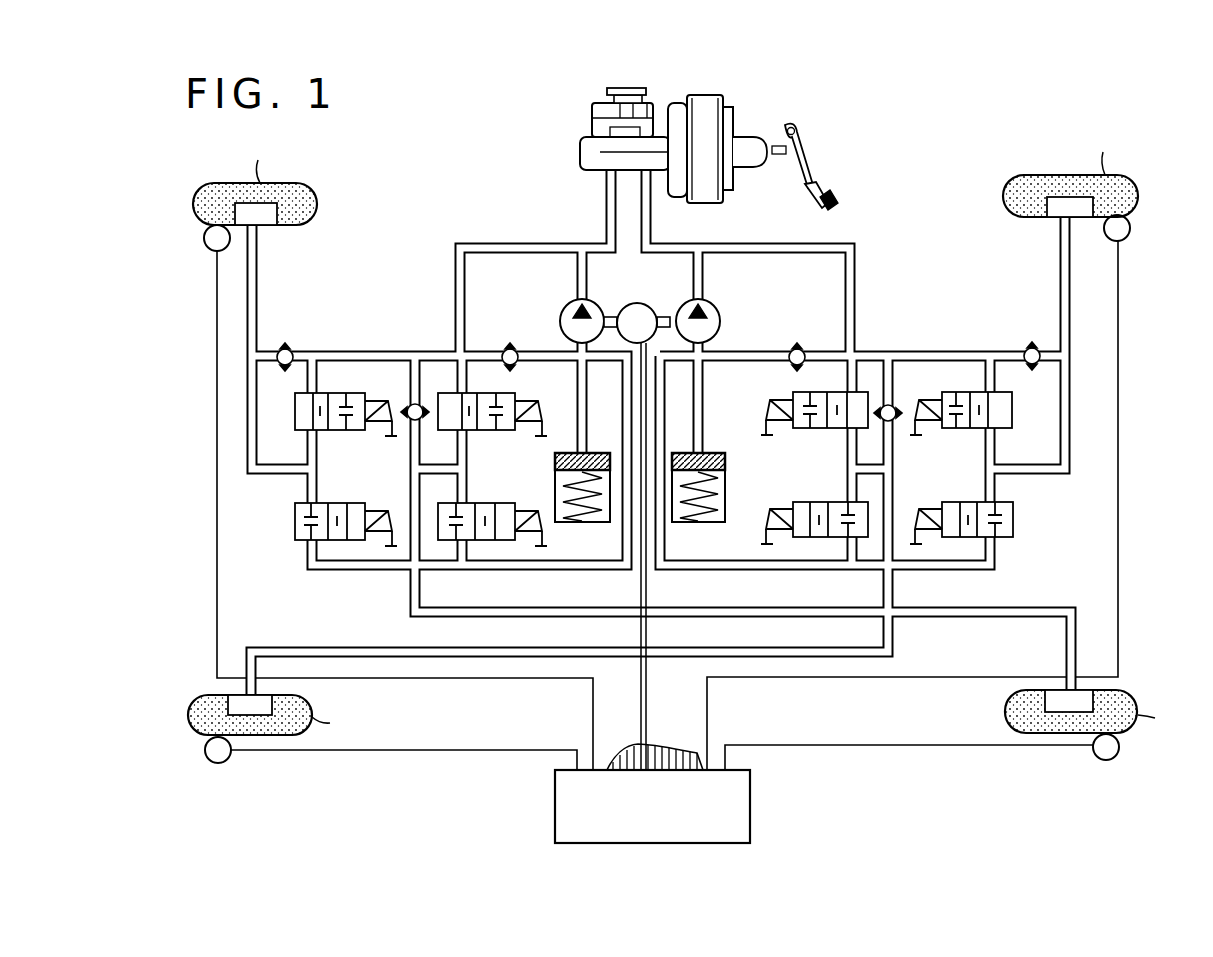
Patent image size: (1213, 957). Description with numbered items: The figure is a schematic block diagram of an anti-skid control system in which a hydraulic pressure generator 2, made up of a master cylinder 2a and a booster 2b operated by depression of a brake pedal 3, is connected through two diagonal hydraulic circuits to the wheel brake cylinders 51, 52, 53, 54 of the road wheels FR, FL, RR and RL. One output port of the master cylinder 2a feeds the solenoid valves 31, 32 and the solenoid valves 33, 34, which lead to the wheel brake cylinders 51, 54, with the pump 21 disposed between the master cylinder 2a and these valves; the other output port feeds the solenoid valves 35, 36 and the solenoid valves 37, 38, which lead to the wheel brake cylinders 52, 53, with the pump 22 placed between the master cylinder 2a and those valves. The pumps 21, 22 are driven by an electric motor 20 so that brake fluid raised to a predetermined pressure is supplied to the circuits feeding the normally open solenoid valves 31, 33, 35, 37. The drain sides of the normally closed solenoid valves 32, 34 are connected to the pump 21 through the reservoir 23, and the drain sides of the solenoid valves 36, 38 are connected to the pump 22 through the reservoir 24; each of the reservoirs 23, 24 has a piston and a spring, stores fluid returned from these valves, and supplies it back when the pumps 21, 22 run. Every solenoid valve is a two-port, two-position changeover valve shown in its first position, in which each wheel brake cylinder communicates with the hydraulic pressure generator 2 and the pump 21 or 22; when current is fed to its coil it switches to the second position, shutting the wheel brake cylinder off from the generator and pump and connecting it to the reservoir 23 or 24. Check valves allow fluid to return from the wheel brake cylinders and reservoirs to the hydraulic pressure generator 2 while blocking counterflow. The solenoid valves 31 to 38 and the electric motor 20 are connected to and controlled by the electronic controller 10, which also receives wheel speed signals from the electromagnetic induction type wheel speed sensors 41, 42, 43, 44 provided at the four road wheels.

The hydraulic pressure generator 2 is at (590, 127).
The master cylinder 2a is at (583, 166).
The booster 2b is at (716, 200).
The brake pedal 3 is at (810, 166).
The electronic controller 10 is at (752, 810).
The electric motor 20 is at (642, 302).
The pump 21 is at (572, 303).
The pump 22 is at (712, 303).
The reservoir 23 is at (568, 523).
The reservoir 24 is at (695, 523).
The solenoid valve 31 is at (336, 394).
The solenoid valve 32 is at (350, 503).
The solenoid valve 33 is at (510, 394).
The solenoid valve 34 is at (508, 503).
The solenoid valve 35 is at (795, 394).
The solenoid valve 36 is at (800, 502).
The solenoid valve 37 is at (946, 394).
The solenoid valve 38 is at (948, 502).
The wheel speed sensor 41 is at (207, 248).
The wheel speed sensor 42 is at (230, 758).
The wheel speed sensor 43 is at (1128, 238).
The wheel speed sensor 44 is at (1093, 757).
The wheel brake cylinder 51 is at (267, 218).
The wheel brake cylinder 52 is at (265, 697).
The wheel brake cylinder 53 is at (1057, 206).
The wheel brake cylinder 54 is at (1053, 691).